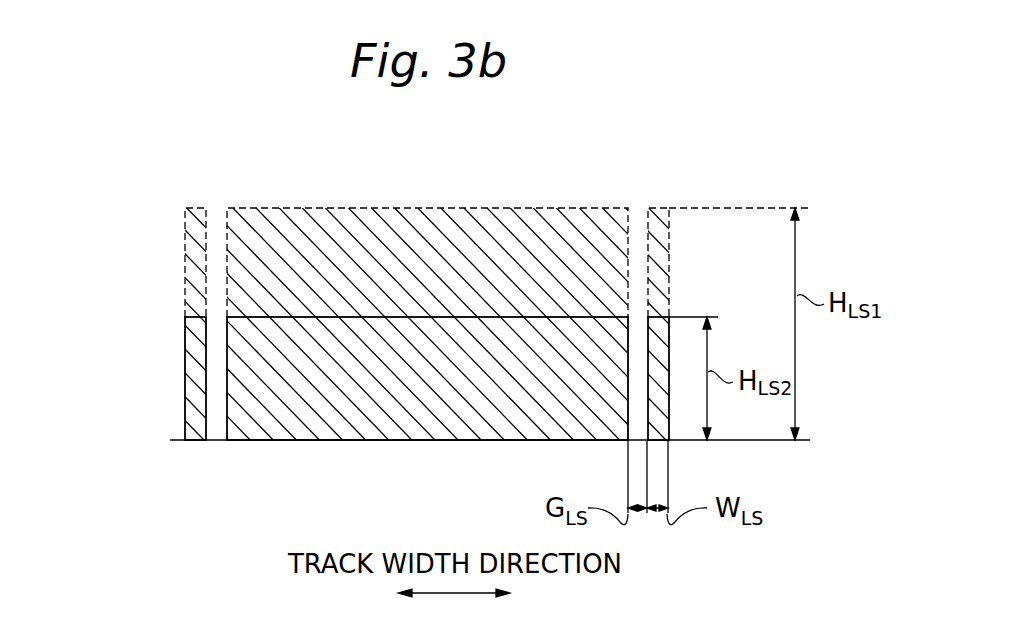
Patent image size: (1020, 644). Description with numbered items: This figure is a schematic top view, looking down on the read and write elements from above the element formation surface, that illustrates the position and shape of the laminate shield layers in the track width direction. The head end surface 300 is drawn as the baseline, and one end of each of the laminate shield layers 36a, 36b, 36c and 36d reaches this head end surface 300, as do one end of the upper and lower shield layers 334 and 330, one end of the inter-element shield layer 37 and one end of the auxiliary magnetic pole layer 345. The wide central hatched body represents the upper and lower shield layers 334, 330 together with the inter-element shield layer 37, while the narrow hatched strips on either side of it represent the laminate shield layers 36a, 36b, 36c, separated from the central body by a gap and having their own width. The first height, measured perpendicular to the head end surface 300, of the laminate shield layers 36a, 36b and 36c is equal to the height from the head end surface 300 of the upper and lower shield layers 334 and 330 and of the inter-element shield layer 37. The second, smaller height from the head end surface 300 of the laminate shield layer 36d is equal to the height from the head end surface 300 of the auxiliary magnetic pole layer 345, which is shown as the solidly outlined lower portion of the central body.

The lower shield layer 330 is at (448, 285).
The upper shield layer 334 is at (448, 285).
The inter-element shield layer 37 is at (480, 165).
The auxiliary magnetic pole layer 345 is at (277, 359).
The laminate shield layer 36a is at (448, 299).
The laminate shield layer 36b is at (692, 165).
The laminate shield layer 36c is at (448, 285).
The laminate shield layer 36d is at (183, 389).
The head end surface 300 is at (296, 442).